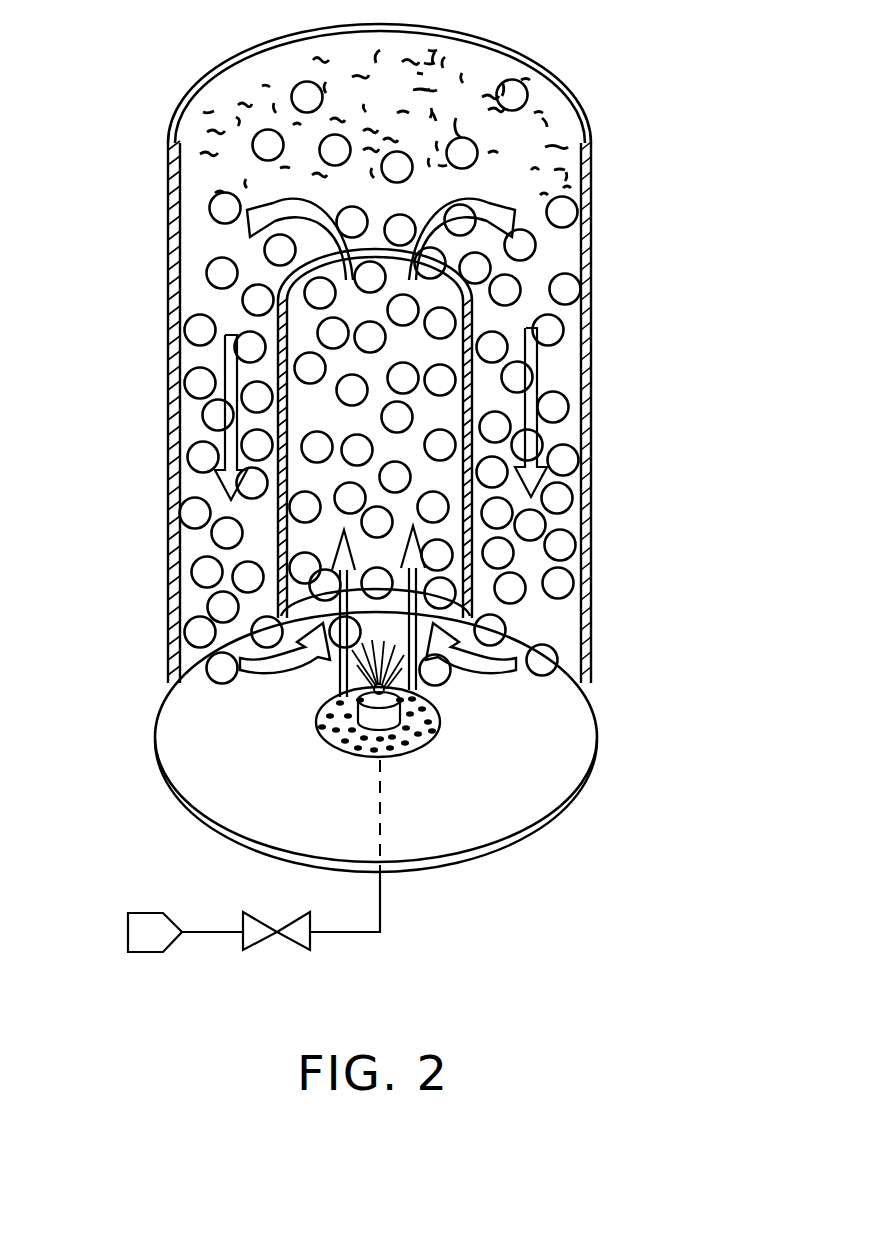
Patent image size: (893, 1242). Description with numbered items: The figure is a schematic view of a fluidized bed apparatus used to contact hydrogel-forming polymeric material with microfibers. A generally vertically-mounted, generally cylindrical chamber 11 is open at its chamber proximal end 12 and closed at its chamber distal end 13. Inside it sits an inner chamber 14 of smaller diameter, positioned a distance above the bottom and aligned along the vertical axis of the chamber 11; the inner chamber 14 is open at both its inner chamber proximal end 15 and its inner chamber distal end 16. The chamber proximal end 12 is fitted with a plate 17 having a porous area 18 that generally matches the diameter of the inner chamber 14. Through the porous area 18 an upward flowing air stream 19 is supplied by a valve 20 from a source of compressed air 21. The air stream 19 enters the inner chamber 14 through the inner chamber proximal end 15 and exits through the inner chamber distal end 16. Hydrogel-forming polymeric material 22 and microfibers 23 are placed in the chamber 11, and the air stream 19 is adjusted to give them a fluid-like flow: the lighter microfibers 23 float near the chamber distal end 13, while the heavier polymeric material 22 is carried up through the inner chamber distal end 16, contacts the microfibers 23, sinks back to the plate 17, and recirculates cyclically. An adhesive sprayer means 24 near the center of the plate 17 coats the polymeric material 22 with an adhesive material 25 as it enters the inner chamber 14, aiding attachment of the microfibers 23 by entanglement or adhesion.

The chamber 11 is at (140, 424).
The chamber proximal end 12 is at (168, 683).
The chamber distal end 13 is at (258, 48).
The inner chamber 14 is at (280, 513).
The inner chamber proximal end 15 is at (282, 610).
The inner chamber distal end 16 is at (290, 272).
The plate 17 is at (172, 790).
The porous area 18 is at (440, 727).
The upward flowing air stream 19 is at (412, 643).
The valve 20 is at (292, 950).
The source of compressed air 21 is at (140, 952).
The hydrogel-forming polymeric material 22 is at (535, 326).
The microfibers 23 is at (486, 50).
The adhesive sprayer means 24 is at (407, 758).
The adhesive material 25 is at (410, 680).